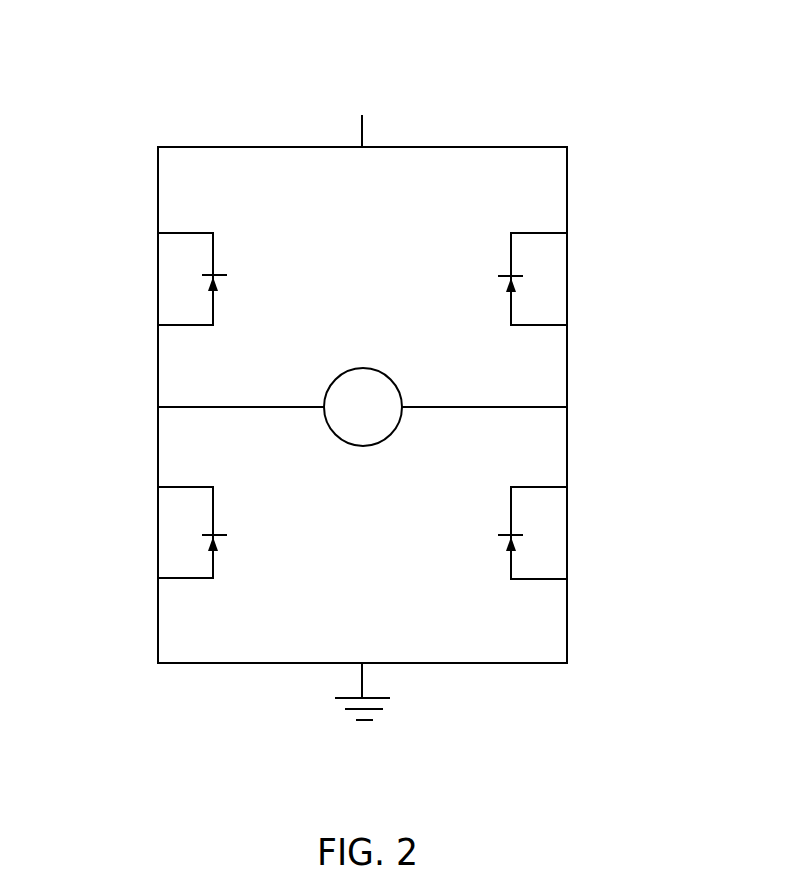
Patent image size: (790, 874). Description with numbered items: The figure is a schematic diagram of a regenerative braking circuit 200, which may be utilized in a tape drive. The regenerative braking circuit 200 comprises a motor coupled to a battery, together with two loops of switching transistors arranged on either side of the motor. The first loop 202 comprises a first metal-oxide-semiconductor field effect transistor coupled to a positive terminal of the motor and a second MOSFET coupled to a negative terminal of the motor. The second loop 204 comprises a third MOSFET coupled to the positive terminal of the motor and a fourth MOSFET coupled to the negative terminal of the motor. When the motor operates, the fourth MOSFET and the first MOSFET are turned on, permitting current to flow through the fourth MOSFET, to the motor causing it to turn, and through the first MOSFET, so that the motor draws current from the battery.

The regenerative braking circuit 200 is at (130, 45).
The first loop 202 is at (616, 148).
The second loop 204 is at (616, 407).